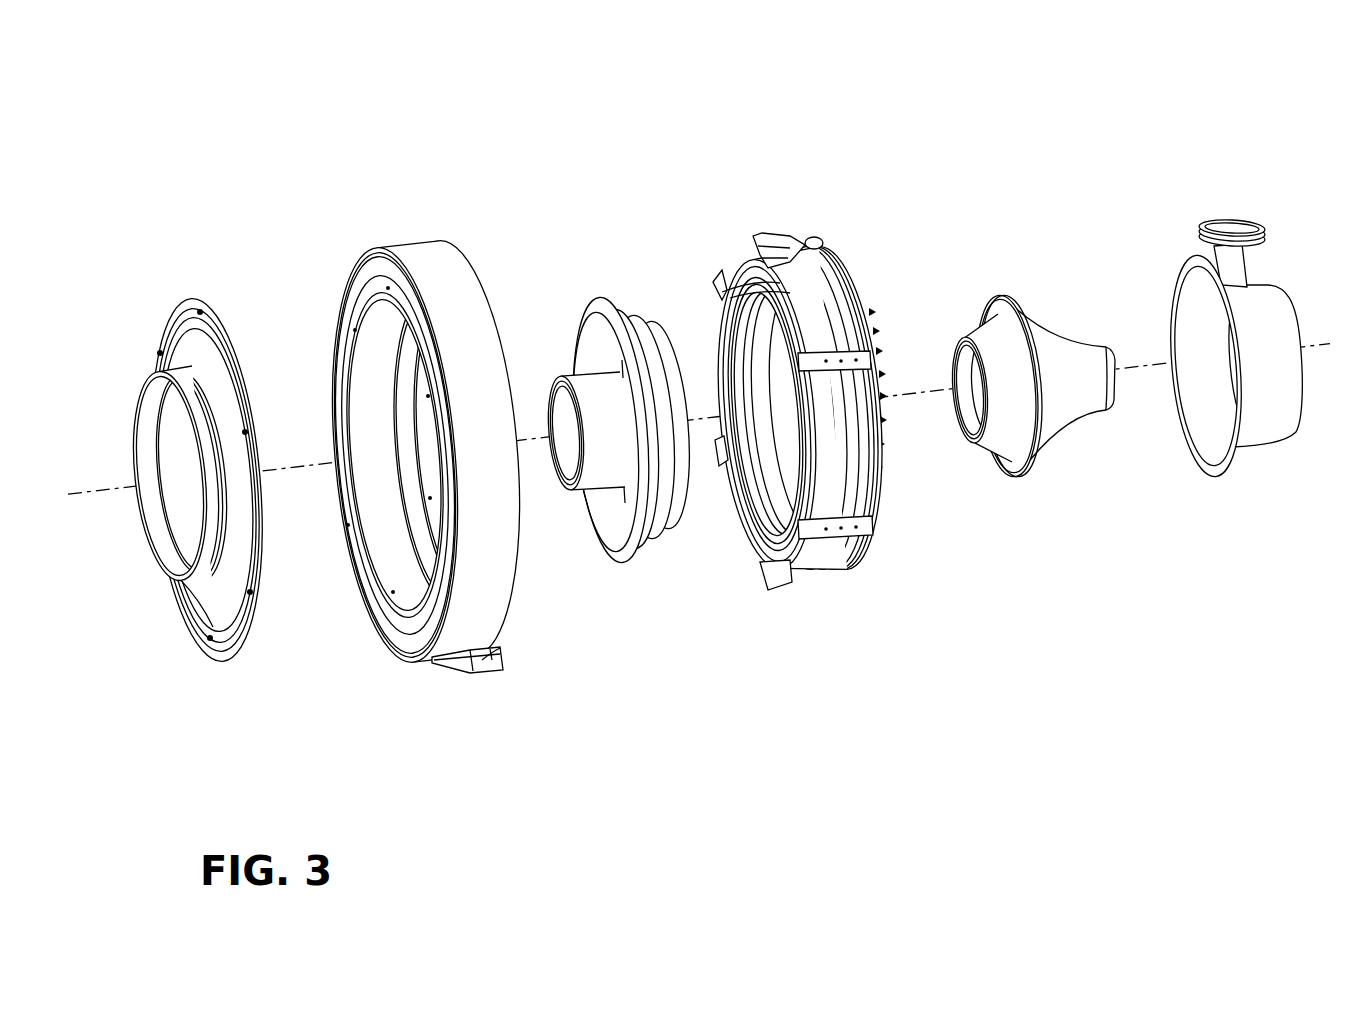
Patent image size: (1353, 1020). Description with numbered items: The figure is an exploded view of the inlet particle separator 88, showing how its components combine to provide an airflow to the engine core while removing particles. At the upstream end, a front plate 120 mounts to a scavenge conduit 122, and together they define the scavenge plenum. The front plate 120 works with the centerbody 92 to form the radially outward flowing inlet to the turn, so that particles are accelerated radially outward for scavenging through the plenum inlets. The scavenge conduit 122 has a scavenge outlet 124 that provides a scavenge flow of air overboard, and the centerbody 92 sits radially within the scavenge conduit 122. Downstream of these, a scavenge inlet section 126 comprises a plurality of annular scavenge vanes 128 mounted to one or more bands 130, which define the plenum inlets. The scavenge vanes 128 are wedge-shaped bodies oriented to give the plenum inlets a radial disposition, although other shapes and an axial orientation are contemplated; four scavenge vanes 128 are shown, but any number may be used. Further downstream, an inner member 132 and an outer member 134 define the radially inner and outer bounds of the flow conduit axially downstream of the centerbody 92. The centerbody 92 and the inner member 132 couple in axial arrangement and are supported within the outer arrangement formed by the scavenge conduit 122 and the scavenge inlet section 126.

The inlet particle separator 88 is at (258, 175).
The centerbody 92 is at (608, 300).
The front plate 120 is at (183, 340).
The scavenge conduit 122 is at (423, 252).
The scavenge outlet 124 is at (505, 650).
The scavenge inlet section 126 is at (793, 353).
The scavenge vanes 128 is at (732, 280).
The bands 130 is at (785, 237).
The inner member 132 is at (1048, 360).
The outer member 134 is at (1267, 310).